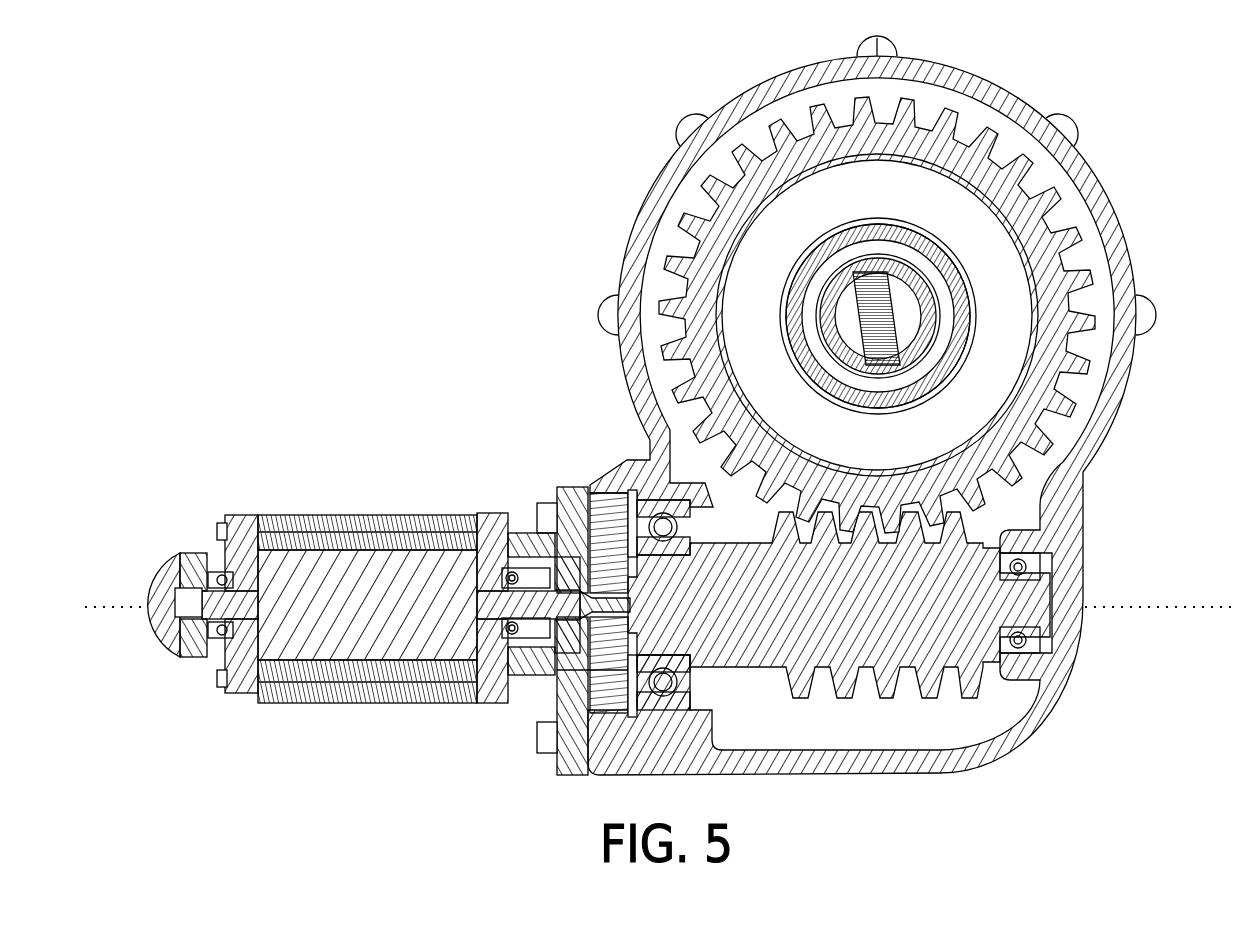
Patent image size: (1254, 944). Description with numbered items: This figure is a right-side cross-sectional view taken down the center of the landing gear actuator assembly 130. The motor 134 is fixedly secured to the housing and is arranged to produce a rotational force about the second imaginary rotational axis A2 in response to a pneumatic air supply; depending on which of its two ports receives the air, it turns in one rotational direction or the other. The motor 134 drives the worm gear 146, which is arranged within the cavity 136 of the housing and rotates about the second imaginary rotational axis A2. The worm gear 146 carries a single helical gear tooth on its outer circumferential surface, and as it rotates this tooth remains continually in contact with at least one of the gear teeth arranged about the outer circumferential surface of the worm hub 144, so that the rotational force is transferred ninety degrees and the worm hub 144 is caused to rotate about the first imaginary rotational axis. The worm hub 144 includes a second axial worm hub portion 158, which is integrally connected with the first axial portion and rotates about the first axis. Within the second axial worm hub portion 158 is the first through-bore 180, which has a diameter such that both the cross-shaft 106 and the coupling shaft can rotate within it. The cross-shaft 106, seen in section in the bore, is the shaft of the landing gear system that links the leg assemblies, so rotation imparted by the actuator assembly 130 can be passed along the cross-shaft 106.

The landing gear actuator assembly 130 is at (522, 257).
The motor 134 is at (394, 618).
The cavity 136 is at (777, 739).
The worm hub 144 is at (710, 173).
The worm gear 146 is at (897, 617).
The second axial worm hub portion 158 is at (925, 310).
The cross-shaft 106 is at (927, 312).
The first through-bore 180 is at (908, 320).
The second imaginary rotational axis A2 is at (90, 607).